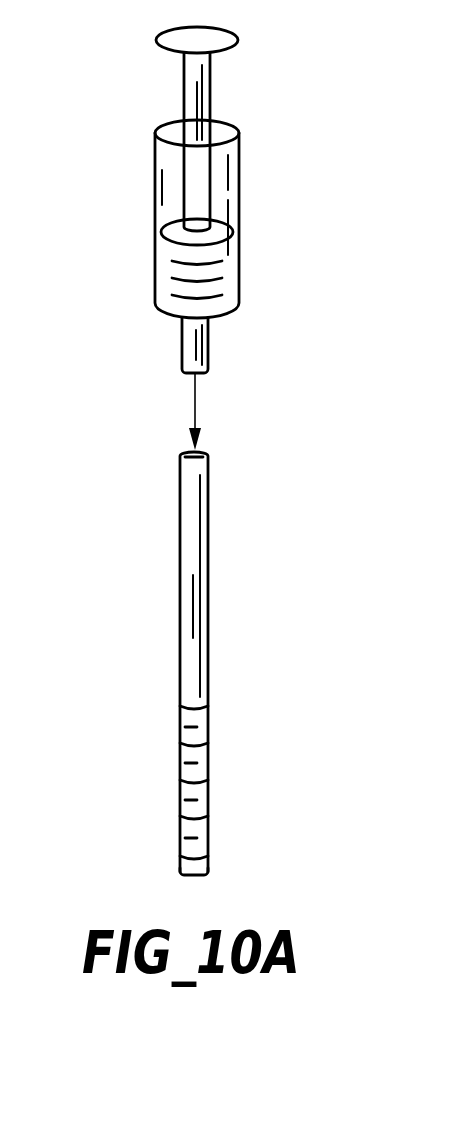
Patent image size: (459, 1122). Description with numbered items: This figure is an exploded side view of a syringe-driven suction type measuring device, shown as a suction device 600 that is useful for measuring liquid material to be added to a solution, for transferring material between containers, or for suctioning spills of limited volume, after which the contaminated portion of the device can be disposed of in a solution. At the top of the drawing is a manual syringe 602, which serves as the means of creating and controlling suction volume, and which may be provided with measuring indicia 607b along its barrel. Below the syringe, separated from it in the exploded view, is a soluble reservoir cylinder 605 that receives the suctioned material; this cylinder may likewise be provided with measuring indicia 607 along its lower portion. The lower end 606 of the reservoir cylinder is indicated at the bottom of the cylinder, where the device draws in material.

The suction device 600 is at (116, 469).
The manual syringe 602 is at (155, 192).
The measuring indicia 607b is at (208, 298).
The soluble reservoir cylinder 605 is at (208, 582).
The measuring indicia 607 is at (196, 821).
The tube distal end 606 is at (176, 877).